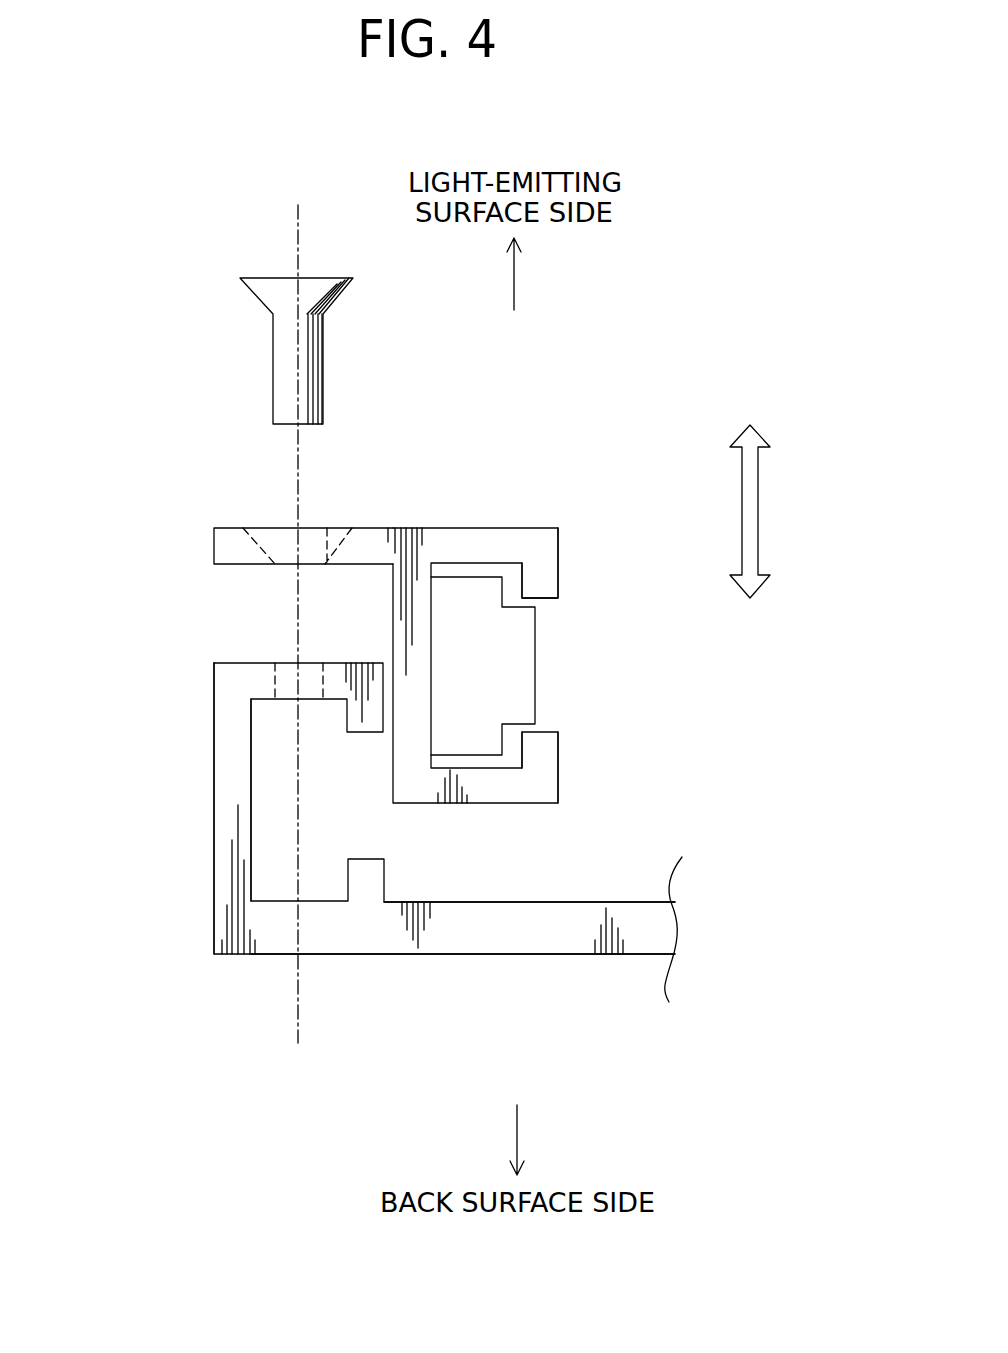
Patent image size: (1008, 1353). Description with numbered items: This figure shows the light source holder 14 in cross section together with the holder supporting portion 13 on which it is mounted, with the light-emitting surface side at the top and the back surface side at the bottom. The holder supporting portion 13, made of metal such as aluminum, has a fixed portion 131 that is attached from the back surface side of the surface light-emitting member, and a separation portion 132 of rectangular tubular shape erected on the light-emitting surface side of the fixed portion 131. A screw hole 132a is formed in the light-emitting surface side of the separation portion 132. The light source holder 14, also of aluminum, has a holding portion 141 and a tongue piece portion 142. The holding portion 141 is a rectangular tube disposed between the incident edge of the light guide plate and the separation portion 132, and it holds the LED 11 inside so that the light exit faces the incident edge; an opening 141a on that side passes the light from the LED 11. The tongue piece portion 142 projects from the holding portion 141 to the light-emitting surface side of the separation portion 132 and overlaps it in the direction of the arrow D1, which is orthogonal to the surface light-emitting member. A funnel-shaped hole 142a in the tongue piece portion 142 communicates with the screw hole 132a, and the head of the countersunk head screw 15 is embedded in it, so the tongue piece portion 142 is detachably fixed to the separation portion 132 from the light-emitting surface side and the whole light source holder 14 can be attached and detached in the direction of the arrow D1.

The LED 11 is at (535, 668).
The holder supporting portion 13 is at (206, 980).
The fixed portion 131 is at (502, 954).
The separation portion 132 is at (214, 803).
The screw hole 132a is at (288, 680).
The light source holder 14 is at (566, 503).
The holding portion 141 is at (547, 580).
The opening 141a is at (549, 732).
The tongue piece portion 142 is at (214, 551).
The funnel-shaped hole 142a is at (340, 546).
The countersunk head screw 15 is at (273, 368).
The arrow D1 is at (758, 512).